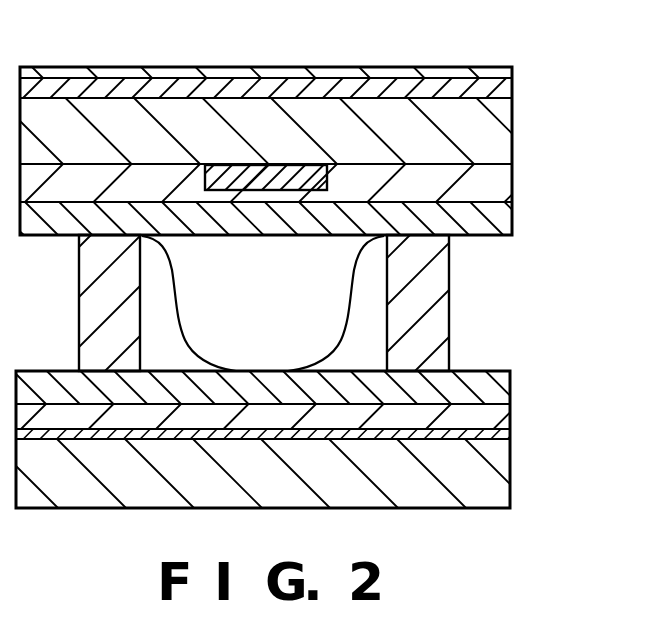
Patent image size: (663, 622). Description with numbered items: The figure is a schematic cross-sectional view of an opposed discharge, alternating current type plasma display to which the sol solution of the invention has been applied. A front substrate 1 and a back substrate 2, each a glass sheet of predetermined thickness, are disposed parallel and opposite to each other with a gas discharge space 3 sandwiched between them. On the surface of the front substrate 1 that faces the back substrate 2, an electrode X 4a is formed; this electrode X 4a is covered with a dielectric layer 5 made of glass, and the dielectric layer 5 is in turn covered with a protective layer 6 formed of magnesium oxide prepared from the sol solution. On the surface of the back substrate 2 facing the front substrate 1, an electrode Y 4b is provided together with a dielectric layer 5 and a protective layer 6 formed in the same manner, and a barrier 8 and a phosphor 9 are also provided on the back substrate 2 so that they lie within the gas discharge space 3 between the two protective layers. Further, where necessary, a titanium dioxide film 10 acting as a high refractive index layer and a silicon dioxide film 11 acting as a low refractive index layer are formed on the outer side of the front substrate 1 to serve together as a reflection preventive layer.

The front substrate 1 is at (498, 147).
The back substrate 2 is at (490, 490).
The gas discharge space 3 is at (247, 319).
The electrode X 4a is at (267, 174).
The electrode Y 4b is at (502, 437).
The dielectric layer 5 is at (497, 183).
The protective layer 6 is at (500, 222).
The barrier 8 is at (433, 287).
The phosphor 9 is at (367, 330).
The titanium dioxide film 10 is at (500, 93).
The silicon dioxide film 11 is at (507, 66).